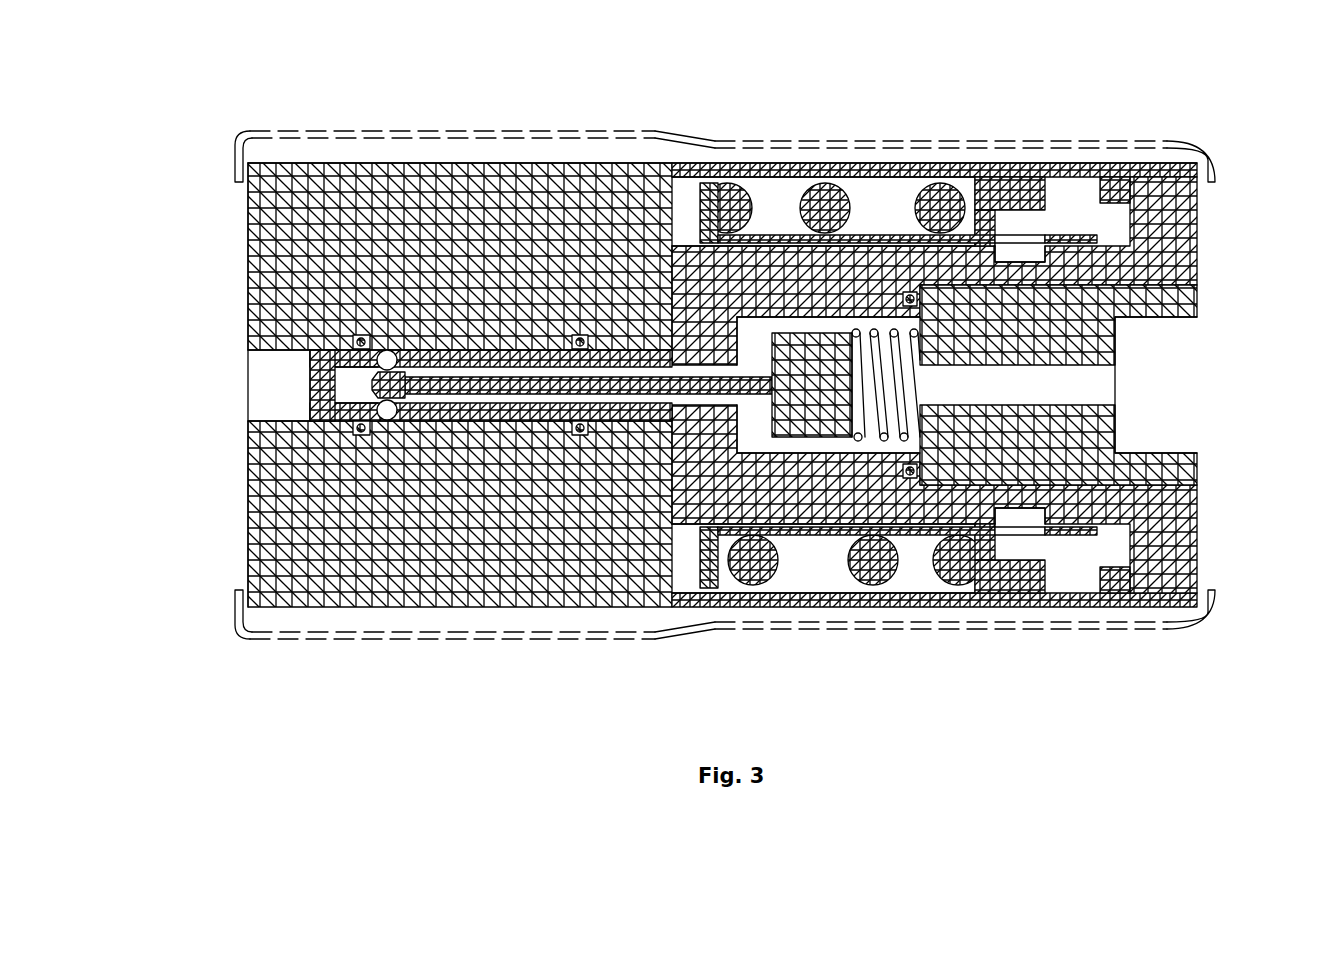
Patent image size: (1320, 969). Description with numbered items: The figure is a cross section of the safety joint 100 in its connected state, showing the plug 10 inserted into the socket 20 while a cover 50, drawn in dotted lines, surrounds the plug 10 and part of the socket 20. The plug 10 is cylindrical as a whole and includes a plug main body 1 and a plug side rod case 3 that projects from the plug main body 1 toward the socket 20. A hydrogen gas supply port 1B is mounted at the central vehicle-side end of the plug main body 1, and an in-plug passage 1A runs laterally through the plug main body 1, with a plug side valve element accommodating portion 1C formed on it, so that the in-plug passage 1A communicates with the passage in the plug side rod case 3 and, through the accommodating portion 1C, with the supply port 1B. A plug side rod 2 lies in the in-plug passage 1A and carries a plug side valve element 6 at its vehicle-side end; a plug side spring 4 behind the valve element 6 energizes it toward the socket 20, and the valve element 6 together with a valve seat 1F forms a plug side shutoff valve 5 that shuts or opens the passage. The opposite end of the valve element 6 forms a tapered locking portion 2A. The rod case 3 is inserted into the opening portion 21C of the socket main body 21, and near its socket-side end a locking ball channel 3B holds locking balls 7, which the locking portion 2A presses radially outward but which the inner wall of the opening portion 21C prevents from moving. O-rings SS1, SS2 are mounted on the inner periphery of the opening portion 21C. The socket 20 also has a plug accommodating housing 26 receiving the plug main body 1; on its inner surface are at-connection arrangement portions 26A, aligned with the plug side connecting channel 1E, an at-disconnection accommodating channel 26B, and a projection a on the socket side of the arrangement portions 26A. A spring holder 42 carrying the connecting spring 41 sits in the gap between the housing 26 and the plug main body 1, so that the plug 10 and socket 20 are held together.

The safety joint 100 is at (570, 94).
The cover 50 is at (658, 130).
The socket main body 21 is at (277, 162).
The opening portion 21C is at (276, 414).
The socket 20 is at (210, 269).
The plug 10 is at (1236, 288).
The plug main body 1 is at (673, 505).
The in-plug passage 1A is at (772, 324).
The hydrogen gas supply port 1B is at (1173, 445).
The plug side valve element accommodating portion 1C is at (842, 322).
The plug side connecting channel 1E is at (1037, 258).
The valve seat 1F is at (738, 430).
The plug side rod 2 is at (640, 386).
The locking portion 2A is at (403, 396).
The plug side rod case 3 is at (542, 420).
The locking ball channel 3B is at (397, 427).
The plug side spring 4 is at (882, 437).
The plug side shutoff valve 5 is at (746, 355).
The plug side valve element 6 is at (790, 430).
The locking balls 7 is at (387, 350).
The plug accommodating housing 26 is at (862, 165).
The at-connection arrangement portions 26A is at (1012, 215).
The at-disconnection accommodating channel 26B is at (1080, 188).
The connecting spring 41 is at (815, 195).
The spring holder 42 is at (1093, 236).
The projection a is at (986, 215).
The O-ring SS1 is at (580, 436).
The O-ring SS2 is at (360, 436).